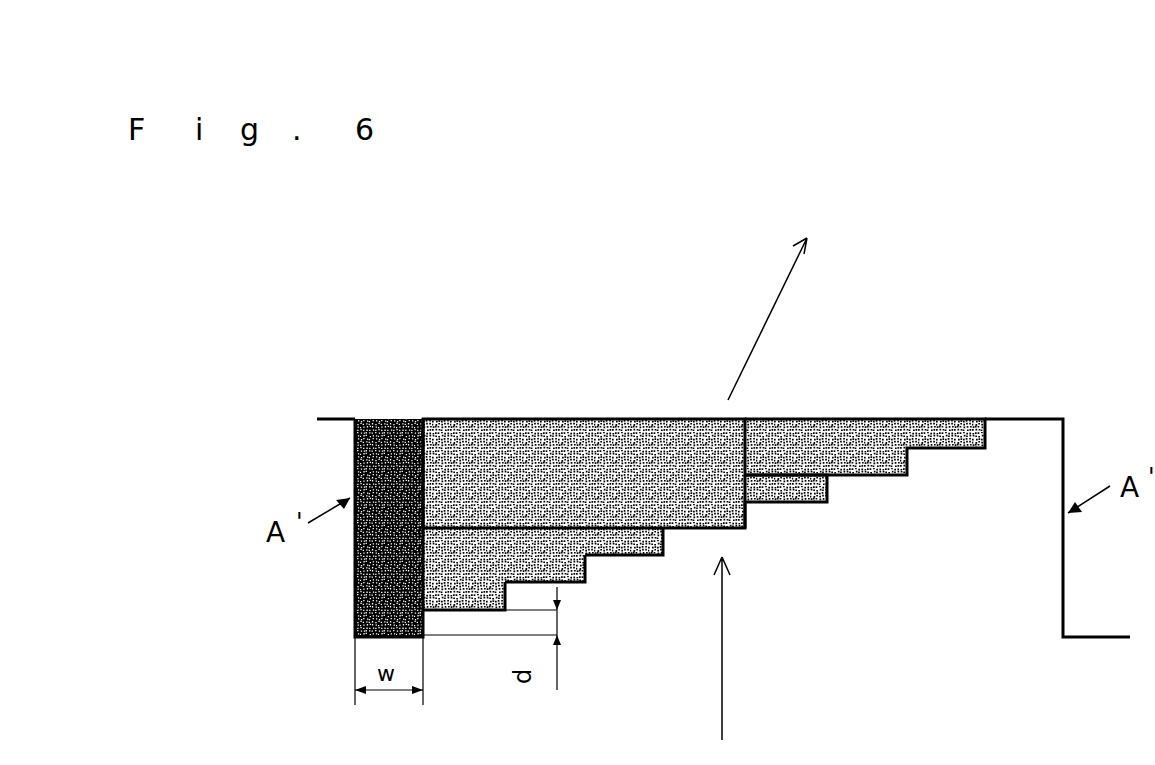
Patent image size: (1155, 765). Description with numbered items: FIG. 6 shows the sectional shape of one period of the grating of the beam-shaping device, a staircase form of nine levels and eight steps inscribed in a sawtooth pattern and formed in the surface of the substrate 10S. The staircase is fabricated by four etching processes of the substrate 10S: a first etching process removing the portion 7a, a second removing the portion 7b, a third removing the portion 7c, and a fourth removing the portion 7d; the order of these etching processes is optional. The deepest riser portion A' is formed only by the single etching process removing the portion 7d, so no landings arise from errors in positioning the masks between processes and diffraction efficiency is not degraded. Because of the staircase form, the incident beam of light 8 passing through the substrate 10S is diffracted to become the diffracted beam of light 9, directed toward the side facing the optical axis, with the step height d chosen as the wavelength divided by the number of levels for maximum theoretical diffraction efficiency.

The portion removed by first etching process 7a is at (578, 445).
The portion removed by second etching process 7b is at (830, 440).
The portion removed by third etching process 7c is at (952, 440).
The portion removed by fourth etching process 7d is at (405, 437).
The incident beam of light 8 is at (722, 647).
The diffracted beam of light 9 is at (781, 290).
The substrate 10S is at (1024, 452).